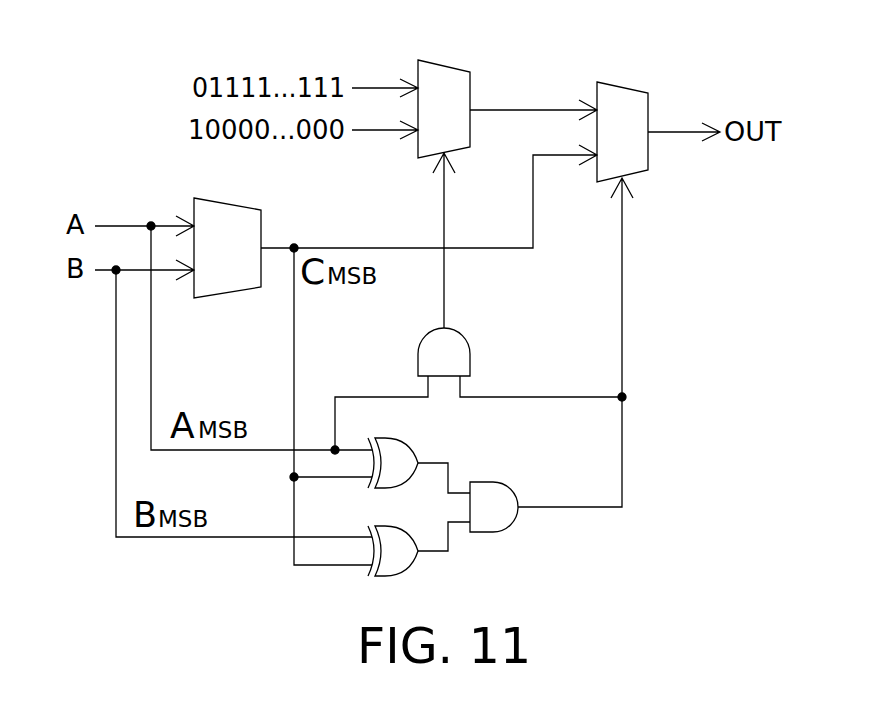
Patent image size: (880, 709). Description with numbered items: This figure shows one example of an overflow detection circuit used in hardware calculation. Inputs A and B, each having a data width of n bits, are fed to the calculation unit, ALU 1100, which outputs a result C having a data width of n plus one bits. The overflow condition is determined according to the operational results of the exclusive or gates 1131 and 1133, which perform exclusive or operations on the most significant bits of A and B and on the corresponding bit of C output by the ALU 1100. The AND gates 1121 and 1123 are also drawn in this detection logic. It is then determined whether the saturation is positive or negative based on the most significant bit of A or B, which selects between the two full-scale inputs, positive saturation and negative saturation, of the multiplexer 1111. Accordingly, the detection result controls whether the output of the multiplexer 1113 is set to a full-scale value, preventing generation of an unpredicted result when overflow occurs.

The calculation unit (ALU) 1100 is at (220, 203).
The multiplexer 1111 is at (447, 63).
The multiplexer 1113 is at (626, 88).
The AND gate 1121 is at (471, 352).
The AND gate 1123 is at (498, 533).
The exclusive or gate 1131 is at (388, 437).
The exclusive or gate 1133 is at (390, 578).